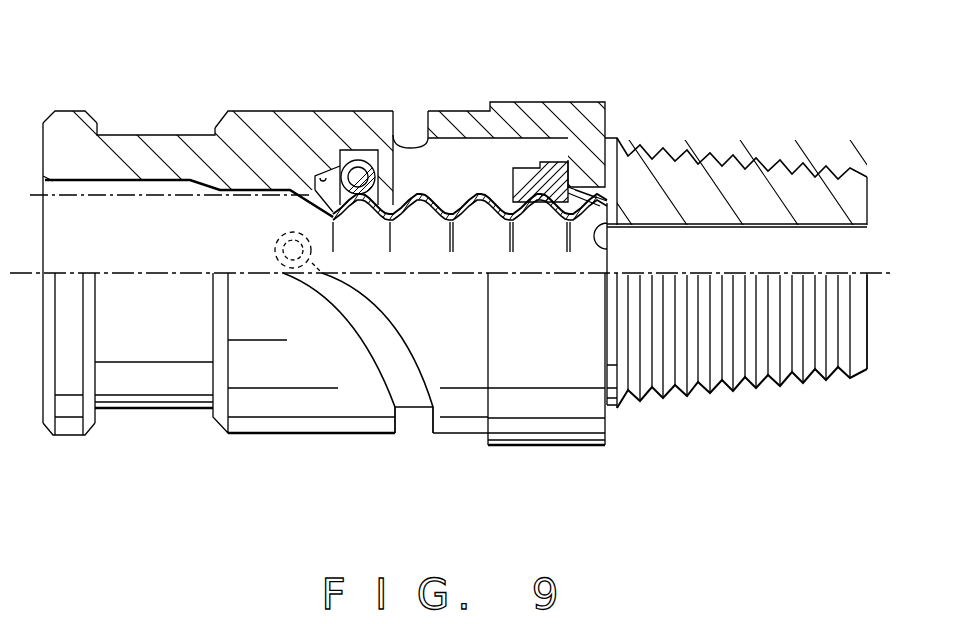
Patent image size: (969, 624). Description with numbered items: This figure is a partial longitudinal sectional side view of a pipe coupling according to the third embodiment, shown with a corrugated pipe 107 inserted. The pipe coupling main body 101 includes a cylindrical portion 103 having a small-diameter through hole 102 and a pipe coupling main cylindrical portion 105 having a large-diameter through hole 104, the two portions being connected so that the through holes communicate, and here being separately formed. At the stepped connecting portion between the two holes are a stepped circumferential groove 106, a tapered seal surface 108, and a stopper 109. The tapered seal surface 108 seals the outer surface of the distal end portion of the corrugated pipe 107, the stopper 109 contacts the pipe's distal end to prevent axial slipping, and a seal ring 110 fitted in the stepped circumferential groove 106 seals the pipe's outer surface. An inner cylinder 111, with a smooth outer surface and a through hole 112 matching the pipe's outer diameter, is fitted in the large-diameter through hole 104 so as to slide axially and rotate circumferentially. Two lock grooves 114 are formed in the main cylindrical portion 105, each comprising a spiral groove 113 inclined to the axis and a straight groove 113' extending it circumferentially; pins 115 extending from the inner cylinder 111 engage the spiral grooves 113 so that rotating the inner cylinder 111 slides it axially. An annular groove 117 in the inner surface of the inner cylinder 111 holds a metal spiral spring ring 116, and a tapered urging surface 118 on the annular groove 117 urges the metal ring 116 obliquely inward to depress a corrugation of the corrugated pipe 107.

The pipe coupling main body 101 is at (527, 102).
The small-diameter through hole 102 is at (772, 237).
The cylindrical portion 103 is at (710, 172).
The large-diameter through hole 104 is at (468, 152).
The pipe coupling main cylindrical portion 105 is at (265, 135).
The stepped circumferential groove 106 is at (590, 190).
The corrugated pipe 107 is at (437, 195).
The tapered seal surface 108 is at (580, 185).
The stopper 109 is at (603, 240).
The seal ring 110 is at (545, 162).
The inner cylinder 111 is at (188, 150).
The through hole 112 is at (152, 140).
The spiral groove 113 is at (357, 340).
The straight groove 113' is at (440, 262).
The lock groove 114 is at (400, 132).
The pin 115 is at (284, 268).
The metal spiral spring ring 116 is at (358, 160).
The annular groove 117 is at (375, 150).
The tapered urging surface 118 is at (320, 172).